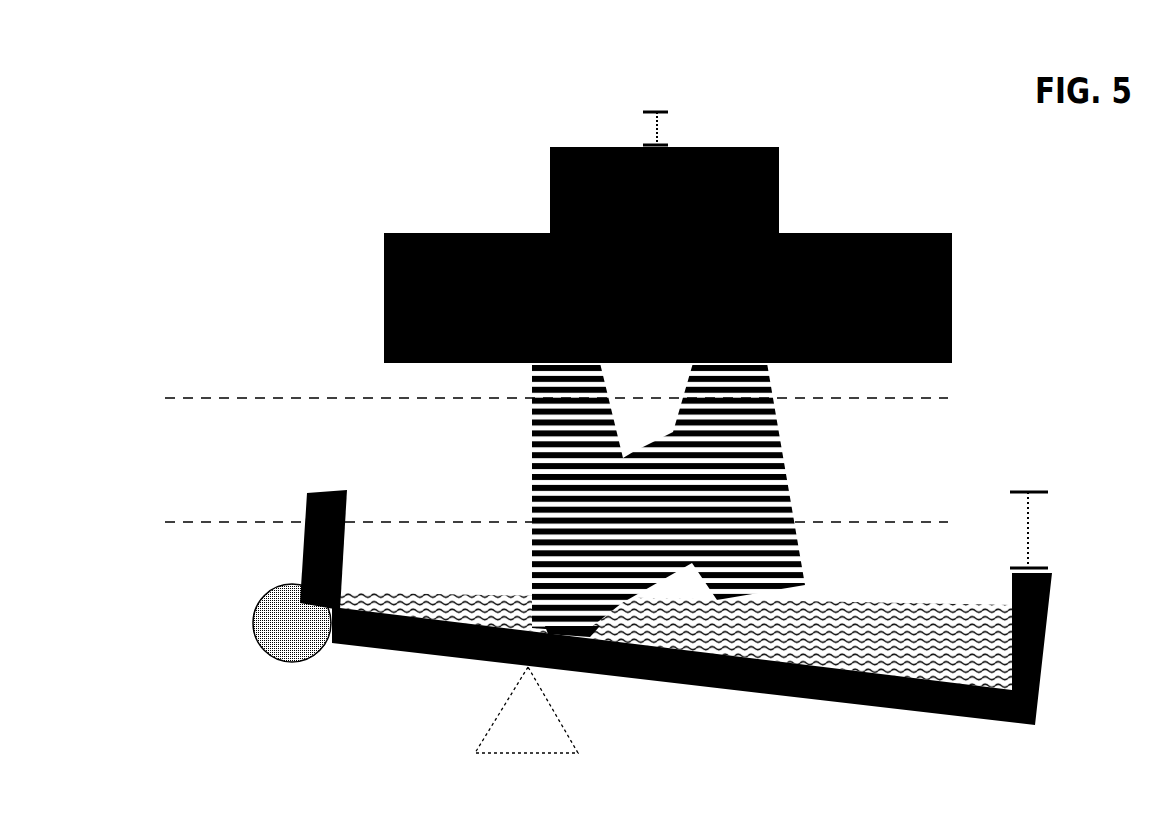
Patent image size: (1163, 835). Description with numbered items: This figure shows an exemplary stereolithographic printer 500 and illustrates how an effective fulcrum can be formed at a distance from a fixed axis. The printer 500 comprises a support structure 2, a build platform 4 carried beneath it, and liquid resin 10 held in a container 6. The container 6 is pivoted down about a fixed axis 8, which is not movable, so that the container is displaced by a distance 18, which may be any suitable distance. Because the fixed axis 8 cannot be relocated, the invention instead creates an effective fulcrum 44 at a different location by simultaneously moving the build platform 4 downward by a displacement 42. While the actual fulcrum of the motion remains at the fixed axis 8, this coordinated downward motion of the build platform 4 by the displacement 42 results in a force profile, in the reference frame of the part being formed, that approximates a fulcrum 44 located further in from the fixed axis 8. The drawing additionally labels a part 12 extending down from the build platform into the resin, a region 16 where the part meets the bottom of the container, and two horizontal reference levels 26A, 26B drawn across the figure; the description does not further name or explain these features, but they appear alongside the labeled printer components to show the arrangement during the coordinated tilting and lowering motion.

The stereolithographic printer 500 is at (186, 126).
The support structure 2 is at (561, 141).
The build platform 4 is at (382, 229).
The displacement 42 is at (646, 106).
The container 6 is at (313, 495).
The fixed axis 8 is at (299, 641).
The liquid resin 10 is at (479, 620).
The printed object 12 is at (539, 494).
The contact region at vat bottom 16 is at (591, 640).
The distance 18 is at (1015, 487).
The upper reference plane 26A is at (556, 386).
The lower reference plane 26B is at (556, 511).
The effective fulcrum 44 is at (538, 726).